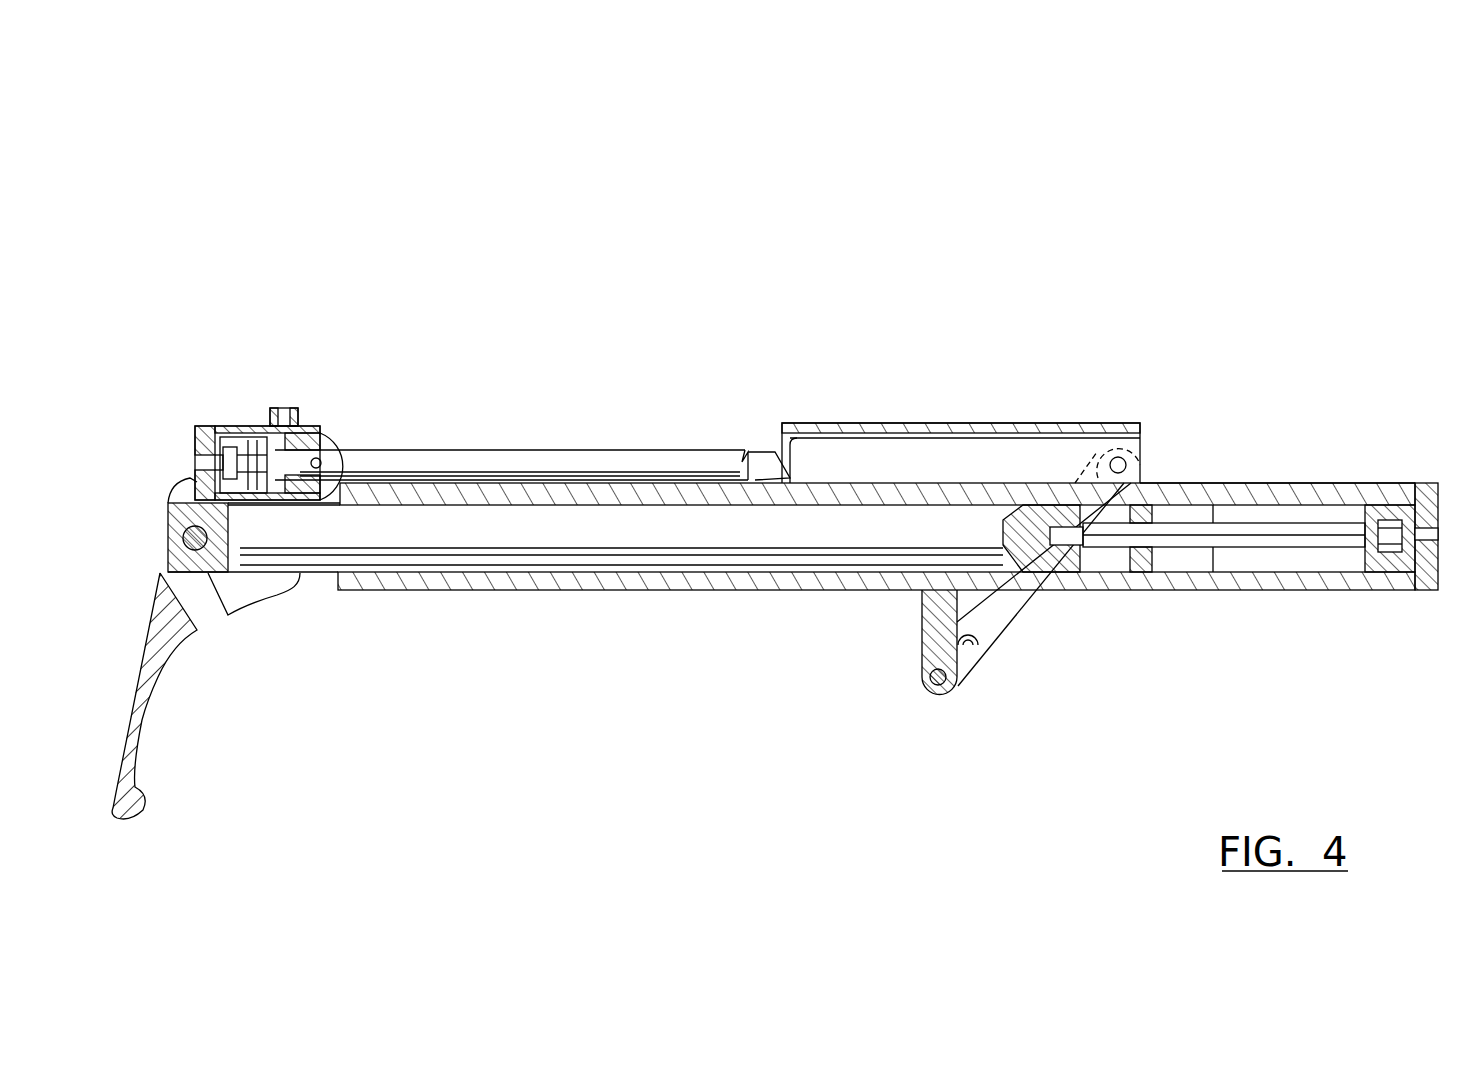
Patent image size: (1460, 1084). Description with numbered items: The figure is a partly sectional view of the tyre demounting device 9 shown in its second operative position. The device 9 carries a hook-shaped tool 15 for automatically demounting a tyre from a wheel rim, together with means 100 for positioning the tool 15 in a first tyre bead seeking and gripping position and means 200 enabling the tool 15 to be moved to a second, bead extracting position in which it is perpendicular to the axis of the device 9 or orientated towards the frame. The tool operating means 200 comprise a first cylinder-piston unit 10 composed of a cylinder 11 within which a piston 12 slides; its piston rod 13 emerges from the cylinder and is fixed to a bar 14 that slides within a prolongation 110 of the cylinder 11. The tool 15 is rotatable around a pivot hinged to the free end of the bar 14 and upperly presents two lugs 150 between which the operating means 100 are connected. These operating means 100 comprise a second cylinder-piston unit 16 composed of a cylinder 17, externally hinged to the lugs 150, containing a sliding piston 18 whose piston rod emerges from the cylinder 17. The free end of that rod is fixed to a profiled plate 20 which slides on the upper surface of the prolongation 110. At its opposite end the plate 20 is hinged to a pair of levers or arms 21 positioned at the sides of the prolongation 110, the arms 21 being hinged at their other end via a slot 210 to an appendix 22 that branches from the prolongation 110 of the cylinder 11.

The device 9 is at (921, 553).
The first cylinder-piston unit 10 is at (1240, 588).
The cylinder 11 is at (1303, 483).
The piston 12 is at (1405, 590).
The piston rod 13 is at (1305, 540).
The bar 14 is at (722, 590).
The tool 15 is at (128, 723).
The second cylinder-piston unit 16 is at (530, 420).
The cylinder 17 is at (218, 426).
The piston 18 is at (254, 426).
The profiled plate 20 is at (1000, 422).
The levers or arms 21 is at (1000, 608).
The appendix 22 is at (936, 688).
The positioning means 100 is at (488, 340).
The prolongation of the cylinder 110 is at (447, 590).
The lugs 150 is at (168, 495).
The tool operating means 200 is at (892, 590).
The slot 210 is at (967, 645).